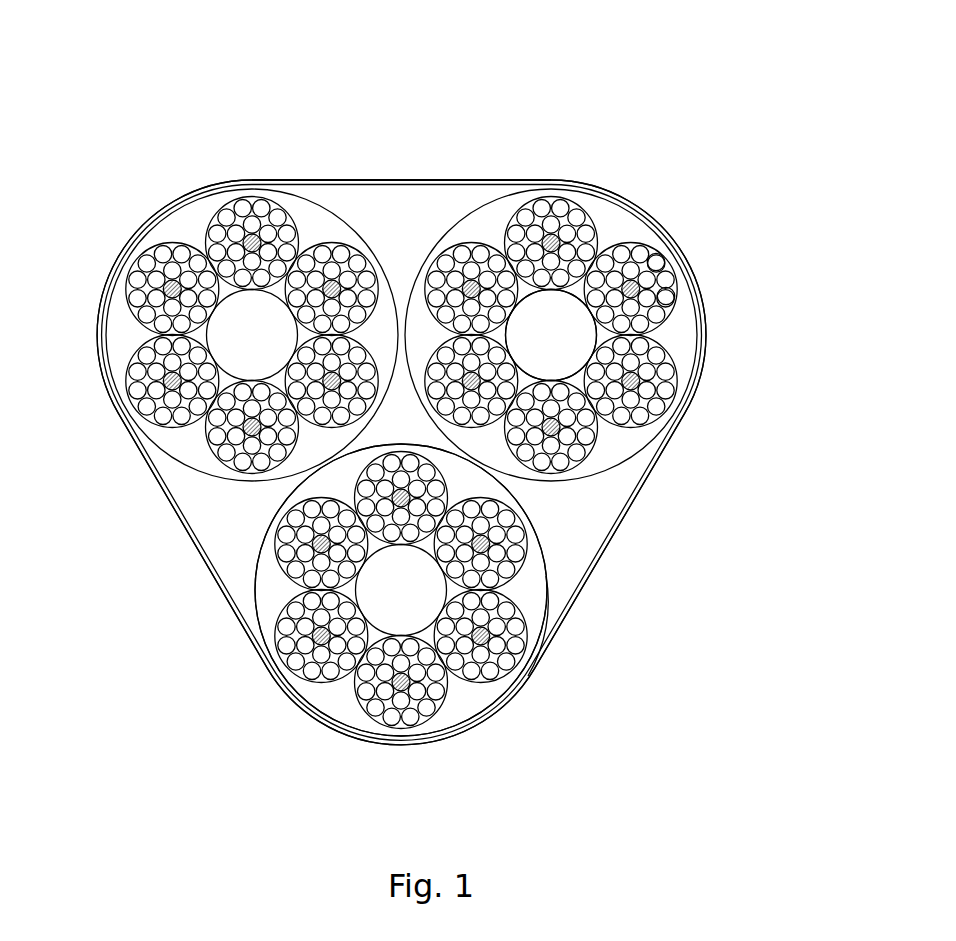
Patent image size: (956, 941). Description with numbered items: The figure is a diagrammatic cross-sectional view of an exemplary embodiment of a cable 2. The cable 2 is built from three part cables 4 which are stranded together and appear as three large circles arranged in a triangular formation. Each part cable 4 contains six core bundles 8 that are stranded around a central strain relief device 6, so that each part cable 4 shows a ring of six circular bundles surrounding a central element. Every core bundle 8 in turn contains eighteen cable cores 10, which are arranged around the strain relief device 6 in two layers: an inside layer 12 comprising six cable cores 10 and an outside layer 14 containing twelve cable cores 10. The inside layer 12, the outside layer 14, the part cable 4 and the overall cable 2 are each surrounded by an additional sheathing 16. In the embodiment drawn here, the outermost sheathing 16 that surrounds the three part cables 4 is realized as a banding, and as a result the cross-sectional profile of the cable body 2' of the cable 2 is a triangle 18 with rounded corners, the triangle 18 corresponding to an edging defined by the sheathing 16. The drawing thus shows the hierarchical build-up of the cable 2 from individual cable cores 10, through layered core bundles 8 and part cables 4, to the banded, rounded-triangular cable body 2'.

The cable 2 is at (386, 387).
The cable body 2' is at (401, 93).
The part cable 4 is at (523, 710).
The strain relief device 6 is at (587, 213).
The core bundle 8 is at (544, 602).
The cable core 10 is at (655, 258).
The inside layer 12 is at (658, 297).
The outside layer 14 is at (668, 348).
The sheathing 16 is at (550, 574).
The triangle 18 is at (327, 180).